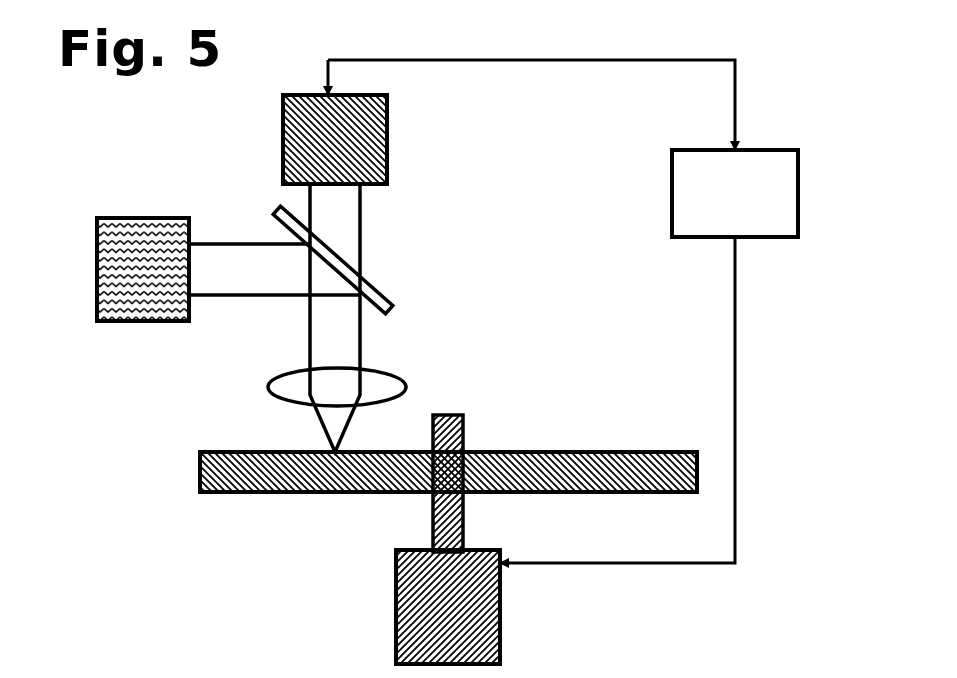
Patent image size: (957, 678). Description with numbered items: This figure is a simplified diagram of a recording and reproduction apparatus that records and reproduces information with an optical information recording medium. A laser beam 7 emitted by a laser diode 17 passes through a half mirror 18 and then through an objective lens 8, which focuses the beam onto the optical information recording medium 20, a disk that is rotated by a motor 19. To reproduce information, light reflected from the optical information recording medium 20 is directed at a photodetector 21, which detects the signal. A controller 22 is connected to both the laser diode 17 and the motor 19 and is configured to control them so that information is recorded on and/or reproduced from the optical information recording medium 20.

The laser beam 7 is at (360, 220).
The objective lens 8 is at (408, 385).
The laser diode 17 is at (387, 133).
The half mirror 18 is at (375, 278).
The motor 19 is at (500, 575).
The optical information recording medium 20 is at (525, 452).
The photodetector 21 is at (138, 321).
The controller 22 is at (798, 205).